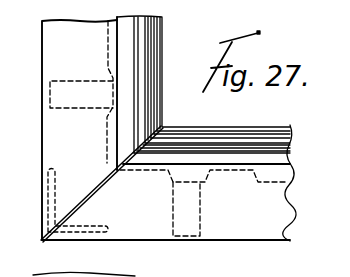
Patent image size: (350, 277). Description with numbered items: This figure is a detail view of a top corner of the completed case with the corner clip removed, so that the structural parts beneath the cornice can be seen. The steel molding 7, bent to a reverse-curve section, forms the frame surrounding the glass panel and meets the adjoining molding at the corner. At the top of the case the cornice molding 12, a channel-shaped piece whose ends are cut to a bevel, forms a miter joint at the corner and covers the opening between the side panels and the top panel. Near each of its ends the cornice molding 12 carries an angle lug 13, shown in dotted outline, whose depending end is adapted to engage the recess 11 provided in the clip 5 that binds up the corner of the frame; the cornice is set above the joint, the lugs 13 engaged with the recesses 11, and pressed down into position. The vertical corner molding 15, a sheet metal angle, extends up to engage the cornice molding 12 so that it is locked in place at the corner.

The clip 5 is at (236, 172).
The molding 7 is at (149, 34).
The recess 11 is at (114, 113).
The cornice molding 12 is at (47, 40).
The angle lug 13 is at (57, 90).
The molding 15 is at (48, 192).